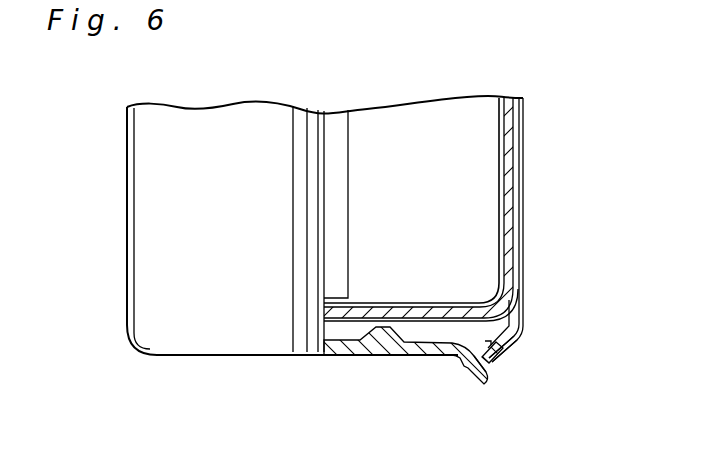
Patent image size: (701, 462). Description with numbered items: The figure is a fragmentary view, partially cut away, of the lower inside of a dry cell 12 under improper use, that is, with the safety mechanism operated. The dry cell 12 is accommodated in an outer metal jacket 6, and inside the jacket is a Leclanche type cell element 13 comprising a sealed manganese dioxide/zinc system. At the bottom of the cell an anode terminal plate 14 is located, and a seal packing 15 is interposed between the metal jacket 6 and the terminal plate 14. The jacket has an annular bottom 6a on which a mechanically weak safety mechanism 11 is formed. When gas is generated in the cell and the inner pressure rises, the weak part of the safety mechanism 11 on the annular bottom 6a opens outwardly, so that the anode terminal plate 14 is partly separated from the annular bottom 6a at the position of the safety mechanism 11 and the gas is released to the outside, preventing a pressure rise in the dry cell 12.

The outer metal jacket 6 is at (523, 198).
The annular bottom 6a is at (486, 340).
The safety mechanism 11 is at (503, 357).
The dry cell 12 is at (423, 118).
The Leclanche type cell element 13 is at (483, 147).
The anode terminal plate 14 is at (422, 357).
The seal packing 15 is at (485, 353).